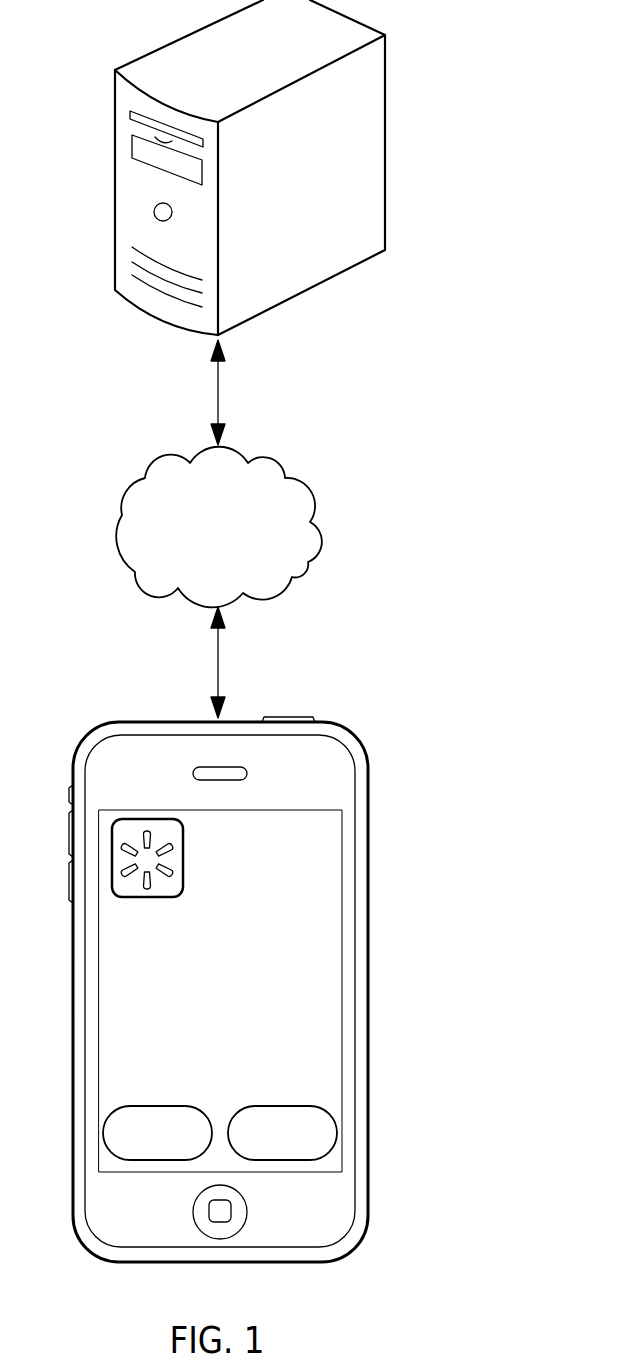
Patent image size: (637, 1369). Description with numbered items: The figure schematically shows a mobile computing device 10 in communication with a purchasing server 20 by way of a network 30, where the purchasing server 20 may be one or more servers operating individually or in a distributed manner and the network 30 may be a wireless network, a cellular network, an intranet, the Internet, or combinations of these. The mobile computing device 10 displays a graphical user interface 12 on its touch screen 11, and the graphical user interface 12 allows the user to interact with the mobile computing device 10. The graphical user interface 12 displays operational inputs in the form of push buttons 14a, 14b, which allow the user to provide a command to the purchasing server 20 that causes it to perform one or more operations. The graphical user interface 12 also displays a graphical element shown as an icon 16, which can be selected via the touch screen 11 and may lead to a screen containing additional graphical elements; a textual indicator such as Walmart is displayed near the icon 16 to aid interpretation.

The mobile computing device 10 is at (93, 730).
The touch screen 11 is at (340, 1052).
The graphical user interface 12 is at (322, 895).
The push button 14a is at (157, 1133).
The push button 14b is at (282, 1133).
The icon 16 is at (183, 880).
The purchasing server 20 is at (388, 135).
The network 30 is at (317, 527).